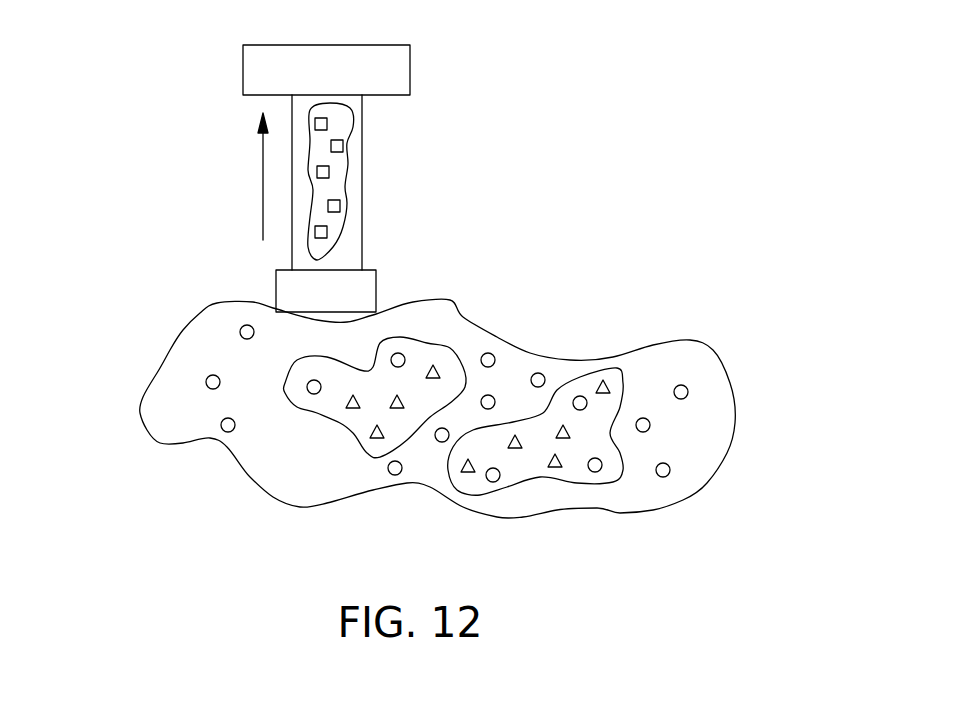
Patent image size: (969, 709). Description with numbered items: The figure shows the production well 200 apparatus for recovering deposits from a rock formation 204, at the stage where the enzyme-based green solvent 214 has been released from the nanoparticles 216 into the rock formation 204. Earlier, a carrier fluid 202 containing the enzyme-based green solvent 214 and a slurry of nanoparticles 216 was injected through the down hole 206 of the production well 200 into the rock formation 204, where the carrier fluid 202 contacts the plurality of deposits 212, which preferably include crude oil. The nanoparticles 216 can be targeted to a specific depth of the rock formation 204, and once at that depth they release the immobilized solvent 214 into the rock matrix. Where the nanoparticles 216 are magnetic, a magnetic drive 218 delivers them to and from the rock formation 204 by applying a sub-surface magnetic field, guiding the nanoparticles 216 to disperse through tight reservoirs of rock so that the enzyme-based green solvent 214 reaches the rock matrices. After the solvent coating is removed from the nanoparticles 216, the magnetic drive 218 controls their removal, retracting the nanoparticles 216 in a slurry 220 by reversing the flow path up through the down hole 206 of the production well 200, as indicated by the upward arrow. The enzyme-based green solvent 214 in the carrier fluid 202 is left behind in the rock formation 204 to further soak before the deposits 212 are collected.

The production well 200 is at (186, 168).
The carrier fluid 202 is at (340, 424).
The rock formation 204 is at (143, 433).
The down hole 206 is at (275, 282).
The deposits 212 is at (206, 380).
The enzyme-based green solvent 214 is at (433, 373).
The nanoparticles 216 is at (329, 170).
The magnetic drive 218 is at (410, 68).
The slurry 220 is at (353, 118).